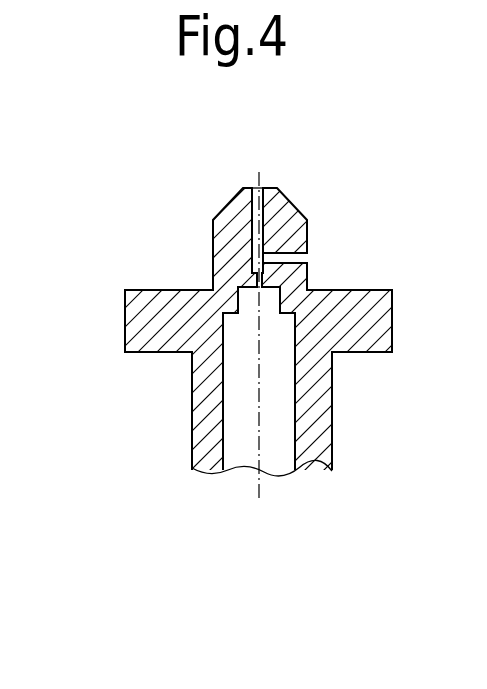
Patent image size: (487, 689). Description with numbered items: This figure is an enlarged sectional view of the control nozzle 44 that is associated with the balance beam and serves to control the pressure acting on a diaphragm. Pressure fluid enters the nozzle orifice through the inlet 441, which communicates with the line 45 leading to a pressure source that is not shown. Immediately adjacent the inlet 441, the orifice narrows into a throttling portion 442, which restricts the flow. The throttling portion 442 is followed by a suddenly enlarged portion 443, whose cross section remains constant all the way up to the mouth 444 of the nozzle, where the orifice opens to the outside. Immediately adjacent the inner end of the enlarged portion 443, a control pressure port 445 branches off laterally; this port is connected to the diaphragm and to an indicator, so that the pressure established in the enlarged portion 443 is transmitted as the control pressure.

The control nozzle 44 is at (250, 182).
The inlet 441 is at (275, 303).
The throttling portion 442 is at (252, 275).
The suddenly enlarged portion 443 is at (250, 212).
The mouth 444 is at (262, 183).
The control pressure port 445 is at (307, 260).
The line 45 is at (263, 472).